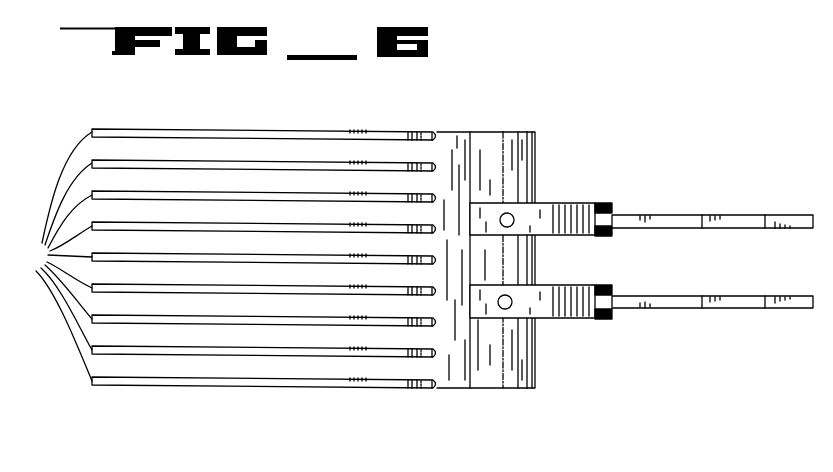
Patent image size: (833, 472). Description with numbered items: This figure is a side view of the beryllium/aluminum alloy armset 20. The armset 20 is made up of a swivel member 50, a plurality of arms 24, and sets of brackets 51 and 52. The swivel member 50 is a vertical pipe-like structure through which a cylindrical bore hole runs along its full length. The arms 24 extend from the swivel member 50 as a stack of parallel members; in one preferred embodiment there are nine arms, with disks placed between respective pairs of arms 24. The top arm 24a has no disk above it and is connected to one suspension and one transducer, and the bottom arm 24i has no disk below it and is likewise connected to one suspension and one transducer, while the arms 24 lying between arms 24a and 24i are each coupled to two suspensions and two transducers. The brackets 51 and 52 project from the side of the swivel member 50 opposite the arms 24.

The armset 20 is at (468, 93).
The arms 24 is at (56, 256).
The top arm 24a is at (230, 130).
The bottom arm 24i is at (218, 389).
The swivel member 50 is at (538, 159).
The brackets 51 is at (590, 203).
The brackets 52 is at (592, 285).